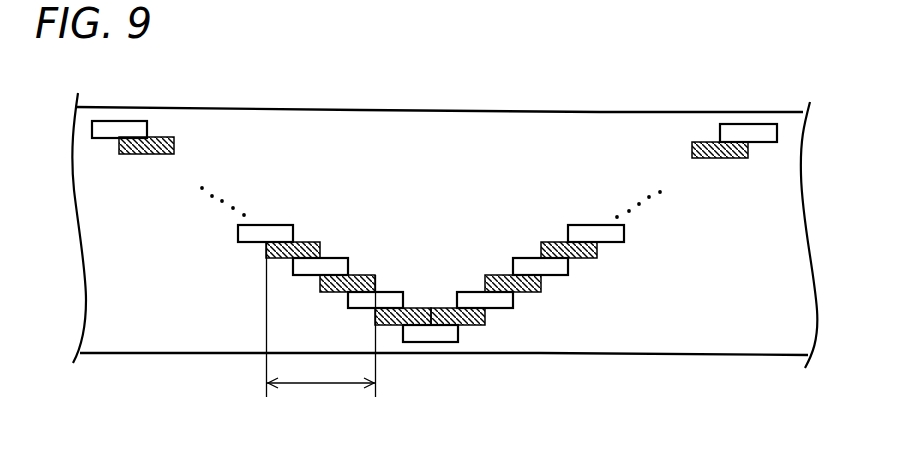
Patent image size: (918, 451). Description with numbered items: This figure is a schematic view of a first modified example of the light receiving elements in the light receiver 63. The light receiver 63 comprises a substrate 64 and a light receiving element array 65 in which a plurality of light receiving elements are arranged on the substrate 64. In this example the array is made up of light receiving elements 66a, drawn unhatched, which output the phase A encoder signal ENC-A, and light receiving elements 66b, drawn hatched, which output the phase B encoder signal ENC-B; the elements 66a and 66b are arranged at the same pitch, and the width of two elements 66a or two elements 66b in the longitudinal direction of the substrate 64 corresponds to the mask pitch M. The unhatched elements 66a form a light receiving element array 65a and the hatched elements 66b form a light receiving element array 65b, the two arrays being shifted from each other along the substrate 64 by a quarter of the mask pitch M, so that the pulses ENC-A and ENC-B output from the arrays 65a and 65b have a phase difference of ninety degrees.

The light receiver 63 is at (474, 126).
The substrate 64 is at (665, 347).
The light receiving element array 65 is at (431, 239).
The light receiving element array 65a is at (274, 222).
The light receiving element array 65b is at (308, 238).
The light receiving element 66a is at (425, 335).
The light receiving element 66b is at (470, 327).
The mask pitch M is at (321, 330).